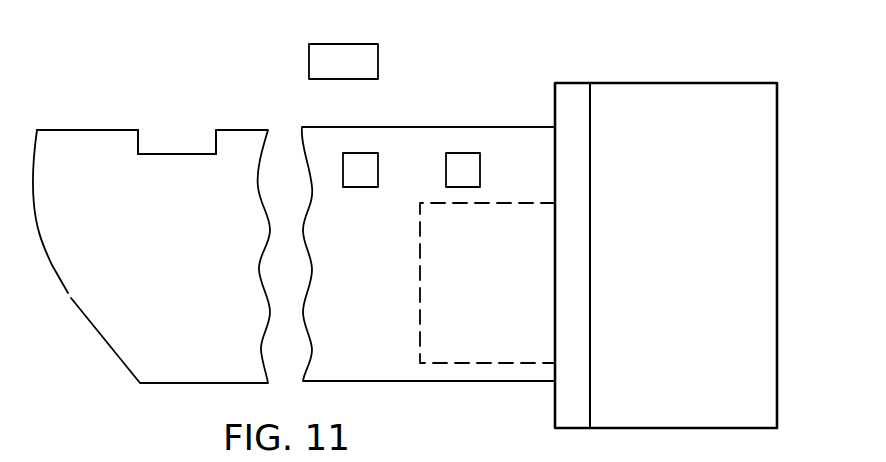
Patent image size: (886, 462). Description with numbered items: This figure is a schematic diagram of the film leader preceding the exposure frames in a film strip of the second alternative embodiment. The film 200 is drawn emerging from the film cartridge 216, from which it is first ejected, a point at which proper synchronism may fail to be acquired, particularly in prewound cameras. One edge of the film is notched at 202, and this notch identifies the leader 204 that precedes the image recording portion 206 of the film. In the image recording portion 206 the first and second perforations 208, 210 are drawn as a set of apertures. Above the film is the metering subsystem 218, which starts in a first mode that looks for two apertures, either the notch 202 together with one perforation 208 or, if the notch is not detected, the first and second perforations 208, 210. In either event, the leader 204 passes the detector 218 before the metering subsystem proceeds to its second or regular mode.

The film 200 is at (192, 388).
The notch 202 is at (172, 153).
The leader 204 is at (87, 143).
The image recording portion 206 is at (383, 358).
The first perforation 208 is at (362, 153).
The second perforation 210 is at (460, 153).
The film cartridge 216 is at (700, 283).
The metering subsystem 218 is at (397, 27).